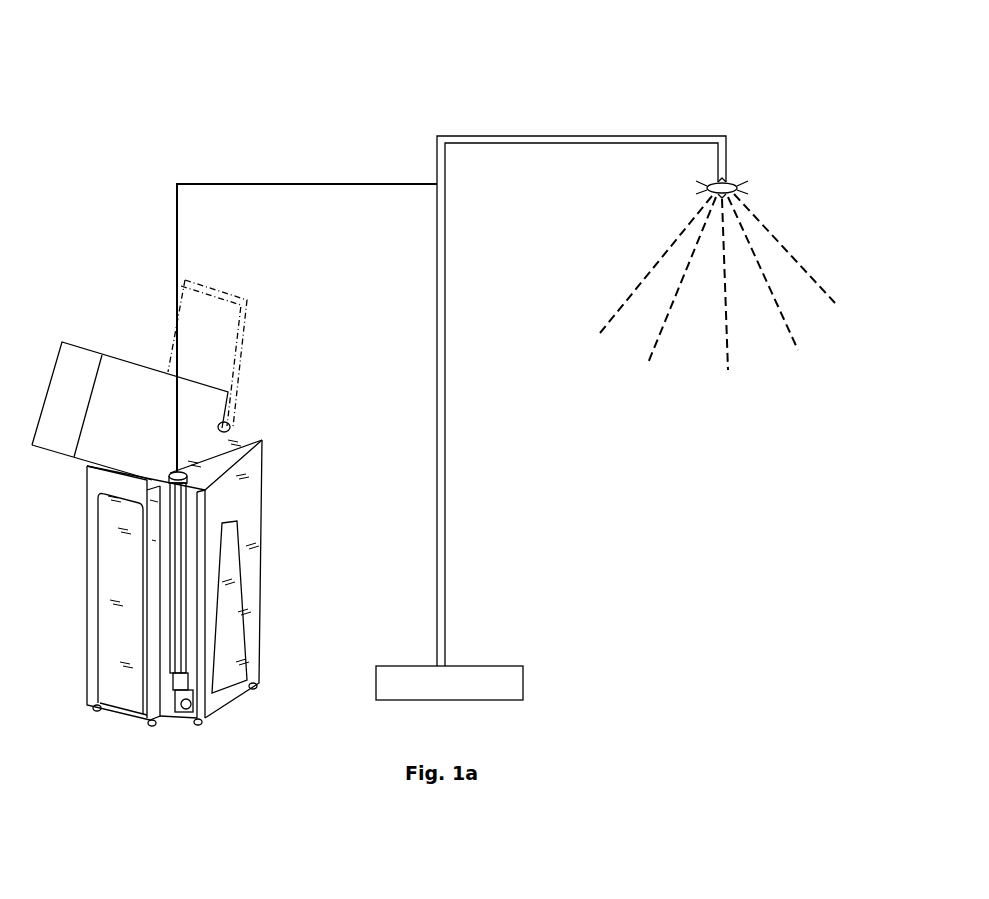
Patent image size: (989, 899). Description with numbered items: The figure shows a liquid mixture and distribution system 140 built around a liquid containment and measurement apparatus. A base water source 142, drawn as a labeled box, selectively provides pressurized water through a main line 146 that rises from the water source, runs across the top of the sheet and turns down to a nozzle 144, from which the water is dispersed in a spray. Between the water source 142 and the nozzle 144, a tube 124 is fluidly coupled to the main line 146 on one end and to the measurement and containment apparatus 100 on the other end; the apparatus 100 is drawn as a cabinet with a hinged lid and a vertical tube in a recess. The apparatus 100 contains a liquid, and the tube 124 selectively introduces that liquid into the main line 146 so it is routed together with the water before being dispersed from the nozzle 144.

The liquid mixture and distribution system 140 is at (140, 106).
The measurement and containment apparatus 100 is at (292, 516).
The tube 124 is at (297, 183).
The main line 146 is at (446, 503).
The nozzle 144 is at (776, 188).
The base water source 142 is at (523, 678).